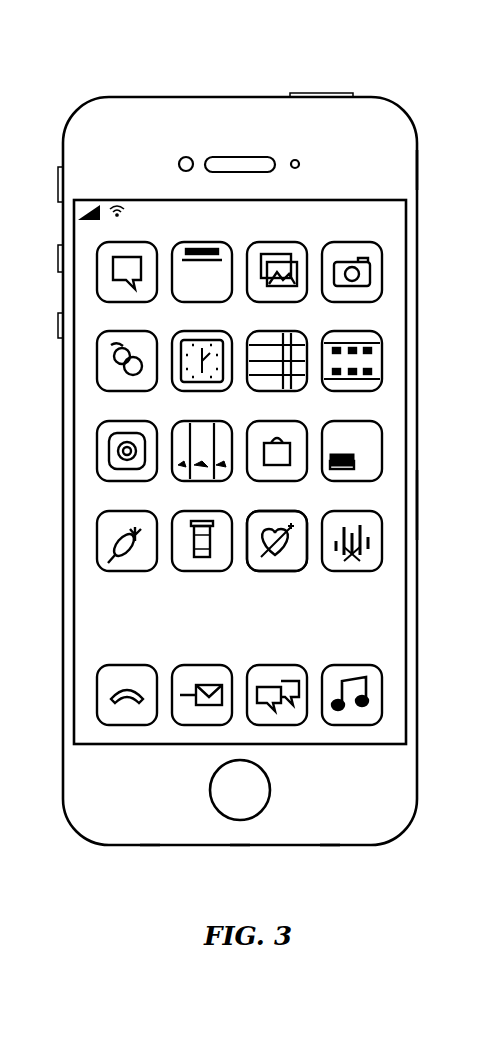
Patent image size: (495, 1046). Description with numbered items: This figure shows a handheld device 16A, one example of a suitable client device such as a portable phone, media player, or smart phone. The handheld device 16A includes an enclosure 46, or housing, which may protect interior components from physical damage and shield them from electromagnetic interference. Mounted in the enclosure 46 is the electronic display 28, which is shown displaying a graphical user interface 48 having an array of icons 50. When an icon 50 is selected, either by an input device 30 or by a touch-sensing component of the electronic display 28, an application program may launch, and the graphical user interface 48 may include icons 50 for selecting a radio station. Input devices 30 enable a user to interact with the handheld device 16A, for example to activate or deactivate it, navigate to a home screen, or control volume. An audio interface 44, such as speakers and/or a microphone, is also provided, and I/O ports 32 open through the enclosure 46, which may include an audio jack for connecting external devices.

The handheld device 16A is at (69, 96).
The electronic display 28 is at (419, 508).
The input devices 30 is at (57, 183).
The I/O ports 32 is at (150, 847).
The audio interface 44 is at (241, 156).
The enclosure 46 is at (419, 166).
The graphical user interface 48 is at (380, 404).
The icon 50 is at (277, 573).